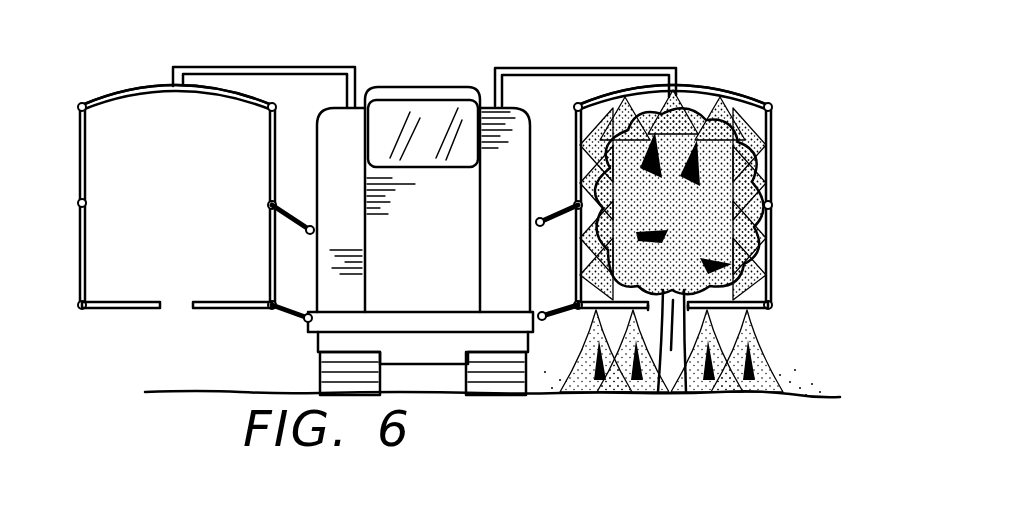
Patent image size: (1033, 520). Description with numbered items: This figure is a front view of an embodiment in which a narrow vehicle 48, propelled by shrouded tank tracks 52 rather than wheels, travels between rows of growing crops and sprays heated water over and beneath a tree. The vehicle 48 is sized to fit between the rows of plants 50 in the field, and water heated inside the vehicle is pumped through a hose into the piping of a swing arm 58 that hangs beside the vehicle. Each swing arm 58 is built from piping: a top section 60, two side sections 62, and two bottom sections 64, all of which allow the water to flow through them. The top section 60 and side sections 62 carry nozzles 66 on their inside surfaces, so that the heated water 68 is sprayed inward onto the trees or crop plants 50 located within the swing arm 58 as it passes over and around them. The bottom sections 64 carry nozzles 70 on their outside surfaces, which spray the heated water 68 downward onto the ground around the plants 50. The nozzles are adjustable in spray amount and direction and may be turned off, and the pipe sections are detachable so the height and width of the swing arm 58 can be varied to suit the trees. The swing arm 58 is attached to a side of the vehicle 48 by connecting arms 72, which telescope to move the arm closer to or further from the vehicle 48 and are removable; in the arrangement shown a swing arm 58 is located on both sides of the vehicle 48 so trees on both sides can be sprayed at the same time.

The vehicle 48 is at (345, 128).
The plants 50 is at (765, 243).
The tank tracks 52 is at (320, 372).
The swing arm 58 is at (127, 92).
The top section 60 is at (147, 86).
The side sections 62 is at (268, 148).
The bottom sections 64 is at (130, 298).
The nozzles 66 is at (762, 110).
The heated water 68 is at (640, 150).
The nozzles 70 is at (630, 313).
The connecting arms 72 is at (296, 212).